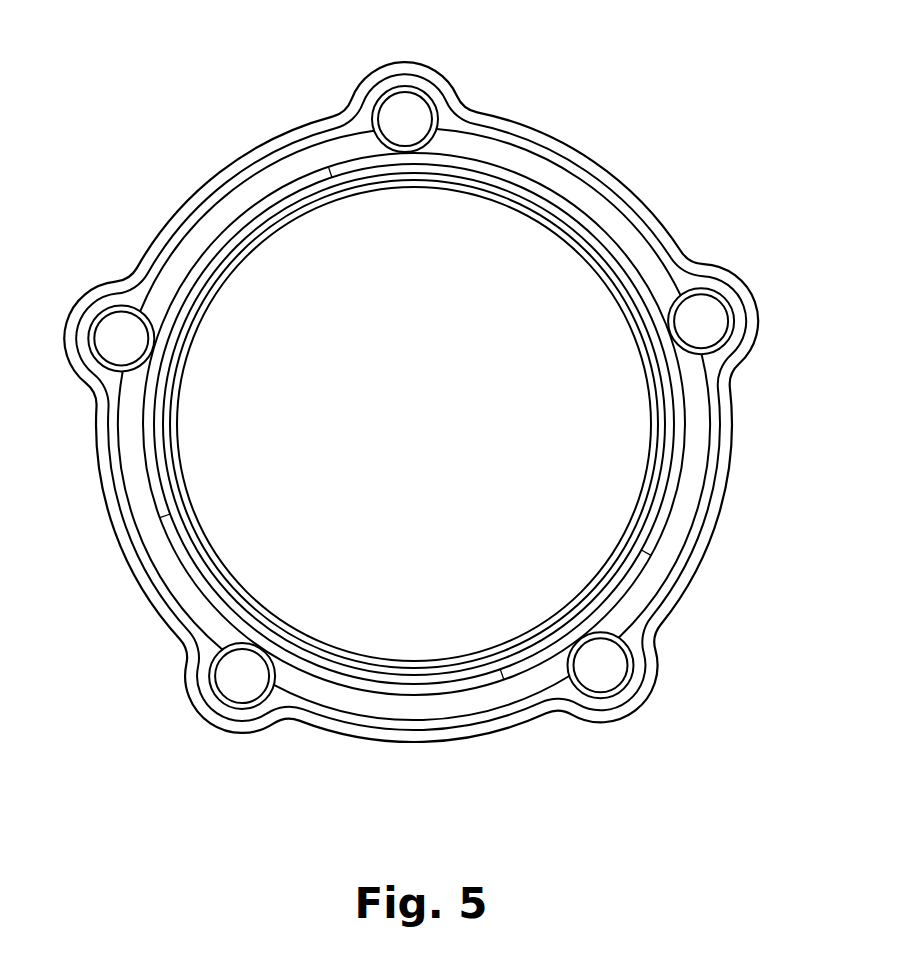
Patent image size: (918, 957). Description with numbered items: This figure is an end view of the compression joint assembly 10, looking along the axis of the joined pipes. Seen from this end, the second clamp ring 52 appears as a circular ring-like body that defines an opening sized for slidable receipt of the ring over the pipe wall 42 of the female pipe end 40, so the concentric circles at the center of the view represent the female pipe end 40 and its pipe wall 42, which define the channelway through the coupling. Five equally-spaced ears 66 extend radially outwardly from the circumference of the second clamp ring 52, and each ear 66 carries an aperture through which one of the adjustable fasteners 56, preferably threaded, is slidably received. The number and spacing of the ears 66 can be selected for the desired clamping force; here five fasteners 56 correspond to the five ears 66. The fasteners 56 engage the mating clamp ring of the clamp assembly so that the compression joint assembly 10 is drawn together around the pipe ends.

The compression joint assembly 10 is at (152, 100).
The second clamp ring 52 is at (591, 157).
The ears 66 is at (410, 62).
The adjustable fasteners 56 is at (386, 120).
The female pipe end 40 is at (633, 543).
The pipe wall 42 is at (618, 573).